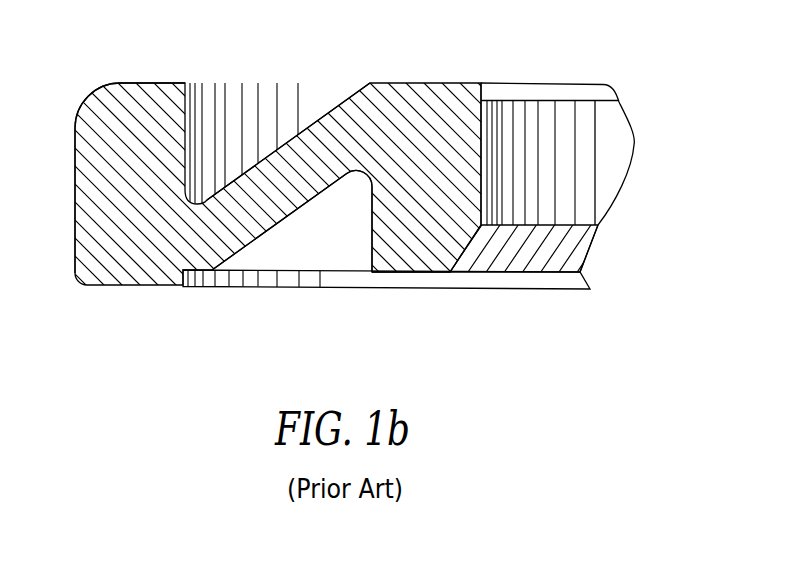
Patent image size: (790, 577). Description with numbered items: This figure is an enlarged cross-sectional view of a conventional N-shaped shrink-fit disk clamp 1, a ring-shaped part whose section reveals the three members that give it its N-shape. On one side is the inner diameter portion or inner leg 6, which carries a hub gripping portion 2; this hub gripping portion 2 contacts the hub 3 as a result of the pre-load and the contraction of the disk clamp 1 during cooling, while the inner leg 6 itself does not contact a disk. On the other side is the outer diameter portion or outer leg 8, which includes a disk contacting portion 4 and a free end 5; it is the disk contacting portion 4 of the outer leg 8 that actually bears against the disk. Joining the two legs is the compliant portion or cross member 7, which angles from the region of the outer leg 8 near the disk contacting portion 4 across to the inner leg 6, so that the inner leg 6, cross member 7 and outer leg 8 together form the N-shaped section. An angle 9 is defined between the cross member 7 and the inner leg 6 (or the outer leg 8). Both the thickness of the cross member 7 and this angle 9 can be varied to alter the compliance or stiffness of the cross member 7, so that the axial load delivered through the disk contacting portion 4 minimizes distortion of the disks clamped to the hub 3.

The disk clamp 1 is at (82, 282).
The hub gripping portion 2 is at (478, 110).
The hub 3 is at (628, 136).
The disk contacting portion 4 is at (138, 288).
The free end 5 is at (82, 203).
The inner leg 6 is at (407, 250).
The cross member 7 is at (300, 164).
The outer leg 8 is at (115, 84).
The angle 9 is at (366, 232).